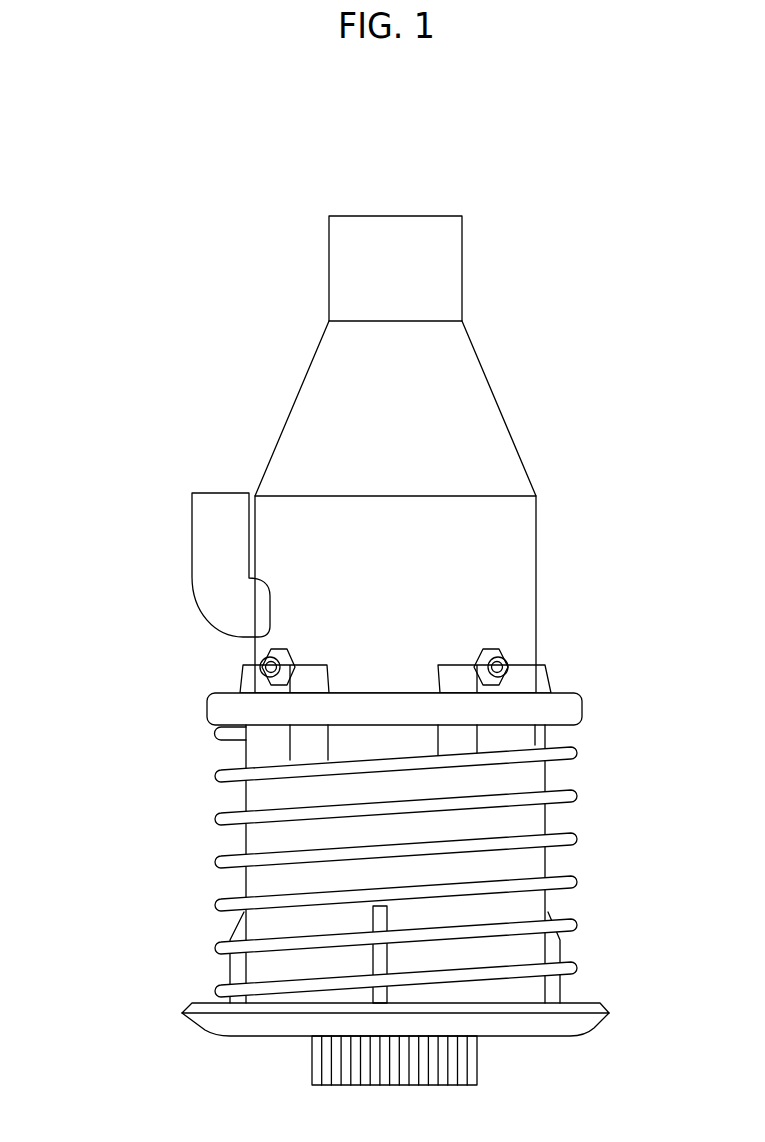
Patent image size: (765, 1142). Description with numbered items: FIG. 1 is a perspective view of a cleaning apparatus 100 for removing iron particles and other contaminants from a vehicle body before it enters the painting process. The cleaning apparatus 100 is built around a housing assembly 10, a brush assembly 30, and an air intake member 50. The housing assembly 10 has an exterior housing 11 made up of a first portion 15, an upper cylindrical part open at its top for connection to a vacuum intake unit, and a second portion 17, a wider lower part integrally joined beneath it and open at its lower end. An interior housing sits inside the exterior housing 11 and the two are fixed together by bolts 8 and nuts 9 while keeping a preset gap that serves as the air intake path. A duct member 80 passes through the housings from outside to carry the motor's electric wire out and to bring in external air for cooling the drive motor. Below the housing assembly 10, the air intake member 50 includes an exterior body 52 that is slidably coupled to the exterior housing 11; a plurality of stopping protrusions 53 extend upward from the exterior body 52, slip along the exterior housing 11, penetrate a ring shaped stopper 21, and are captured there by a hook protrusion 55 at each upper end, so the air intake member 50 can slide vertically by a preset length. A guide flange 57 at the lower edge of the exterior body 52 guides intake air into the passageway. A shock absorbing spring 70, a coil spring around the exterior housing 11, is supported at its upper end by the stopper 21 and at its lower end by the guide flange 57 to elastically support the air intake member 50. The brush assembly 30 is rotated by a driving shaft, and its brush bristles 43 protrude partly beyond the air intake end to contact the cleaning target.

The cleaning apparatus 100 is at (141, 310).
The housing assembly 10 is at (252, 452).
The exterior housing 11 is at (625, 345).
The first portion 15 is at (462, 268).
The second portion 17 is at (536, 532).
The duct member 80 is at (197, 537).
The bolt 8 is at (260, 663).
The nut 9 is at (509, 648).
The hook protrusion 55 is at (302, 674).
The stopper 21 is at (577, 712).
The air intake member 50 is at (228, 880).
The stopping protrusion 53 is at (295, 743).
The exterior body 52 is at (253, 835).
The shock absorbing spring 70 is at (578, 838).
The brush assembly 30 is at (293, 1082).
The guide flange 57 is at (190, 1005).
The brush bristles 43 is at (477, 1066).